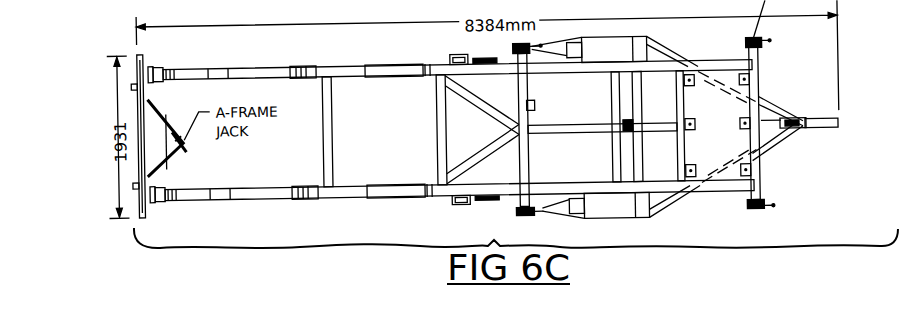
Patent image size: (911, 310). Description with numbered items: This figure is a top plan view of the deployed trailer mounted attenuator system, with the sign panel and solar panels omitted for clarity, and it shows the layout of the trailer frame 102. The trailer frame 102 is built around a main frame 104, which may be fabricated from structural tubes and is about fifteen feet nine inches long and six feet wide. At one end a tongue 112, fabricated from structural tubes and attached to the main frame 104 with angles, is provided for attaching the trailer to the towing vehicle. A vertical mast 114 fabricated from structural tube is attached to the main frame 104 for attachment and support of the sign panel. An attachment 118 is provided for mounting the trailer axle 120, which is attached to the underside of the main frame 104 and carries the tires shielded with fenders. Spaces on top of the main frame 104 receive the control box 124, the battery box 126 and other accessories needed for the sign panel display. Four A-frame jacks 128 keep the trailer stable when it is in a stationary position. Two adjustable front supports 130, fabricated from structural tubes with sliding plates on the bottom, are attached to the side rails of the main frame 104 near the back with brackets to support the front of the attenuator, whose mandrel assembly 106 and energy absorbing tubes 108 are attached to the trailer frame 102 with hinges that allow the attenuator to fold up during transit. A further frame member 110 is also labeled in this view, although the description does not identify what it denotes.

The trailer frame 102 is at (735, 18).
The main frame 104 is at (134, 125).
The mandrel assembly 106 is at (184, 66).
The energy absorbing tubes 108 is at (251, 71).
The cross member 110 is at (638, 197).
The tongue 112 is at (825, 139).
The mast 114 is at (623, 140).
The attachment 118 is at (543, 197).
The trailer axle 120 is at (611, 106).
The control box 124 is at (666, 171).
The battery box 126 is at (727, 153).
The A-frame jacks 128 is at (526, 221).
The front supports 130 is at (451, 63).